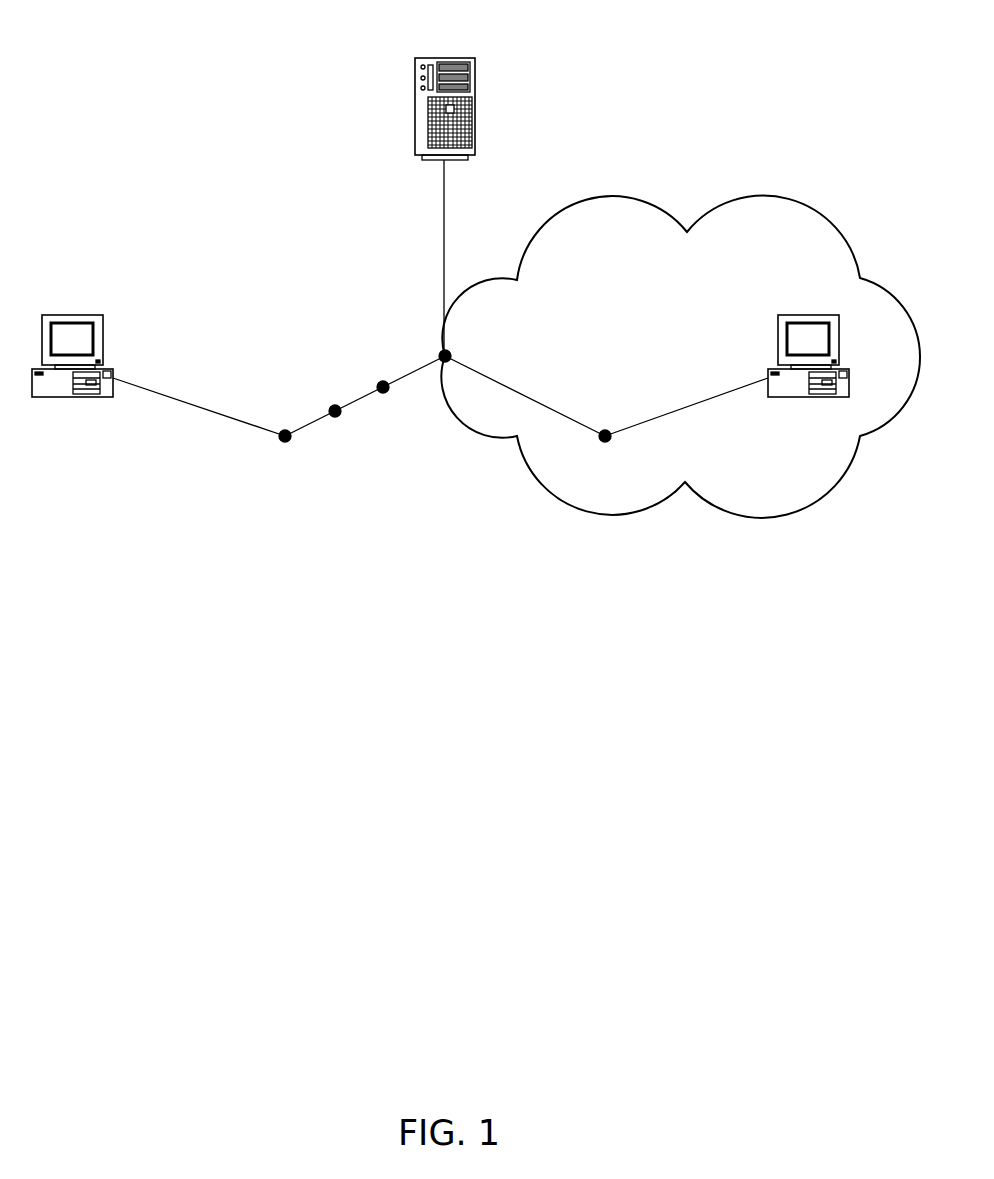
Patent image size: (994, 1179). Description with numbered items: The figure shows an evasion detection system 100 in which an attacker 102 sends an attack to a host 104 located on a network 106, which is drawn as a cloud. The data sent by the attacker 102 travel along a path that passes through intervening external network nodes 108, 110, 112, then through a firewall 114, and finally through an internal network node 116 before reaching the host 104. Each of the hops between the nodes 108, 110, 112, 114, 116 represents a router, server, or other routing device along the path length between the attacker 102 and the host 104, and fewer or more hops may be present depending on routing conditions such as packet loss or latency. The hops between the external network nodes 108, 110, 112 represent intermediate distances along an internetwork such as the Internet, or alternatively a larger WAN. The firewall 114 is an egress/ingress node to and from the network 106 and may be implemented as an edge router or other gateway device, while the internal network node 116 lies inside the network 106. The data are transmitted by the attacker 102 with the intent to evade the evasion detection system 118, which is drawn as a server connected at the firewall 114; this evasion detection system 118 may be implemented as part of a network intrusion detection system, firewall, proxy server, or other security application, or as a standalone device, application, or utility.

The system 100 is at (140, 838).
The attacker 102 is at (72, 314).
The host 104 is at (795, 314).
The network 106 is at (546, 228).
The external network node 108 is at (284, 430).
The external network node 110 is at (334, 405).
The external network node 112 is at (382, 381).
The firewall 114 is at (450, 357).
The internal network node 116 is at (603, 430).
The evasion detection system 118 is at (446, 57).